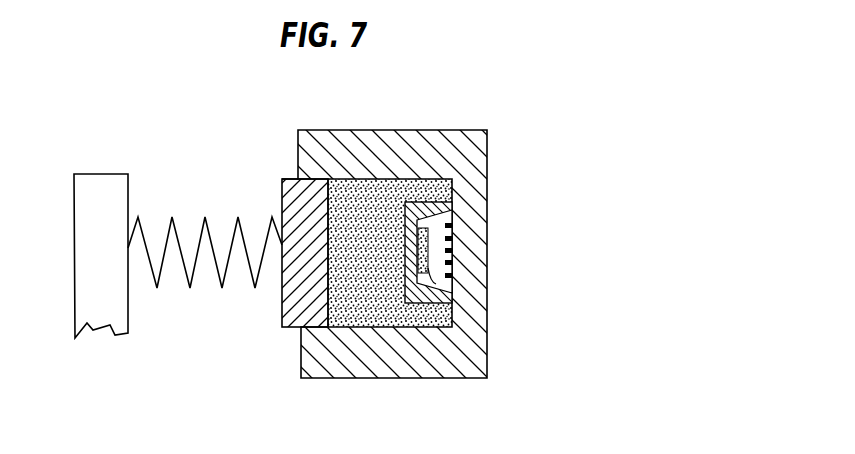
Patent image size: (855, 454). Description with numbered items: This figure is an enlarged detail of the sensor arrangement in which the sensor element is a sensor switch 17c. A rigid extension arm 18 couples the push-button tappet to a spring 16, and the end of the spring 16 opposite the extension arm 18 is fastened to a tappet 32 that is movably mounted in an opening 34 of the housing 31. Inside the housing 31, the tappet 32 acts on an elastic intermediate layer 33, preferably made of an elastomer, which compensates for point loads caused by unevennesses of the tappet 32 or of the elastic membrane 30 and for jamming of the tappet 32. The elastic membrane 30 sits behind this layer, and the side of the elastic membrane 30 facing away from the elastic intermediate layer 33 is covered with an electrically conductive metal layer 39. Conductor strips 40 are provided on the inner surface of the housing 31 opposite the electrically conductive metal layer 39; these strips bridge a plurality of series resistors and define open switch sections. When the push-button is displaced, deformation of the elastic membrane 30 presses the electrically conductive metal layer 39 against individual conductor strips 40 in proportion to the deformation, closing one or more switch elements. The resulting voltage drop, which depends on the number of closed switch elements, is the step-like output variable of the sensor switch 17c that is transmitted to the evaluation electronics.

The spring 16 is at (198, 230).
The sensor switch 17c is at (411, 116).
The extension arm 18 is at (95, 174).
The elastic membrane 30 is at (438, 320).
The housing 31 is at (360, 130).
The tappet 32 is at (282, 310).
The elastic intermediate layer 33 is at (356, 318).
The opening 34 is at (294, 176).
The electrically conductive metal layer 39 is at (452, 285).
The conductor strips 40 is at (453, 275).